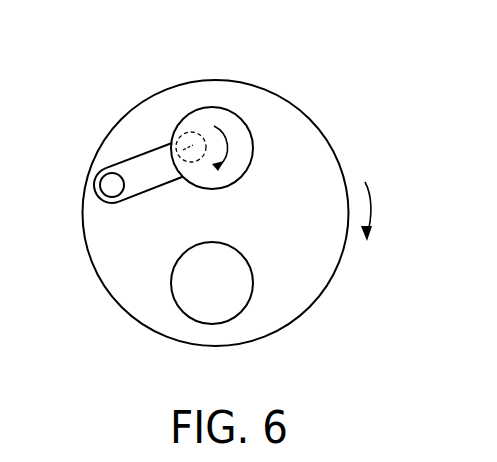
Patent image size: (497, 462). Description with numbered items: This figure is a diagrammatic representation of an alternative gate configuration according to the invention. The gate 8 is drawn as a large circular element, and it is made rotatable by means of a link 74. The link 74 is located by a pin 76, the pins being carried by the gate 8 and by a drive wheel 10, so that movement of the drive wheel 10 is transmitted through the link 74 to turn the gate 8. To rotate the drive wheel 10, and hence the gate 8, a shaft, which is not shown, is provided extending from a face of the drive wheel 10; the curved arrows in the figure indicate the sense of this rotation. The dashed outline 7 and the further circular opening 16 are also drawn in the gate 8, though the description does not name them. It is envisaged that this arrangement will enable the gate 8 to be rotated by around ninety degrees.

The pivot axis 7 is at (196, 132).
The gate 8 is at (296, 157).
The drive wheel 10 is at (237, 132).
The opening 16 is at (236, 296).
The link 74 is at (150, 157).
The pin 76 is at (108, 183).